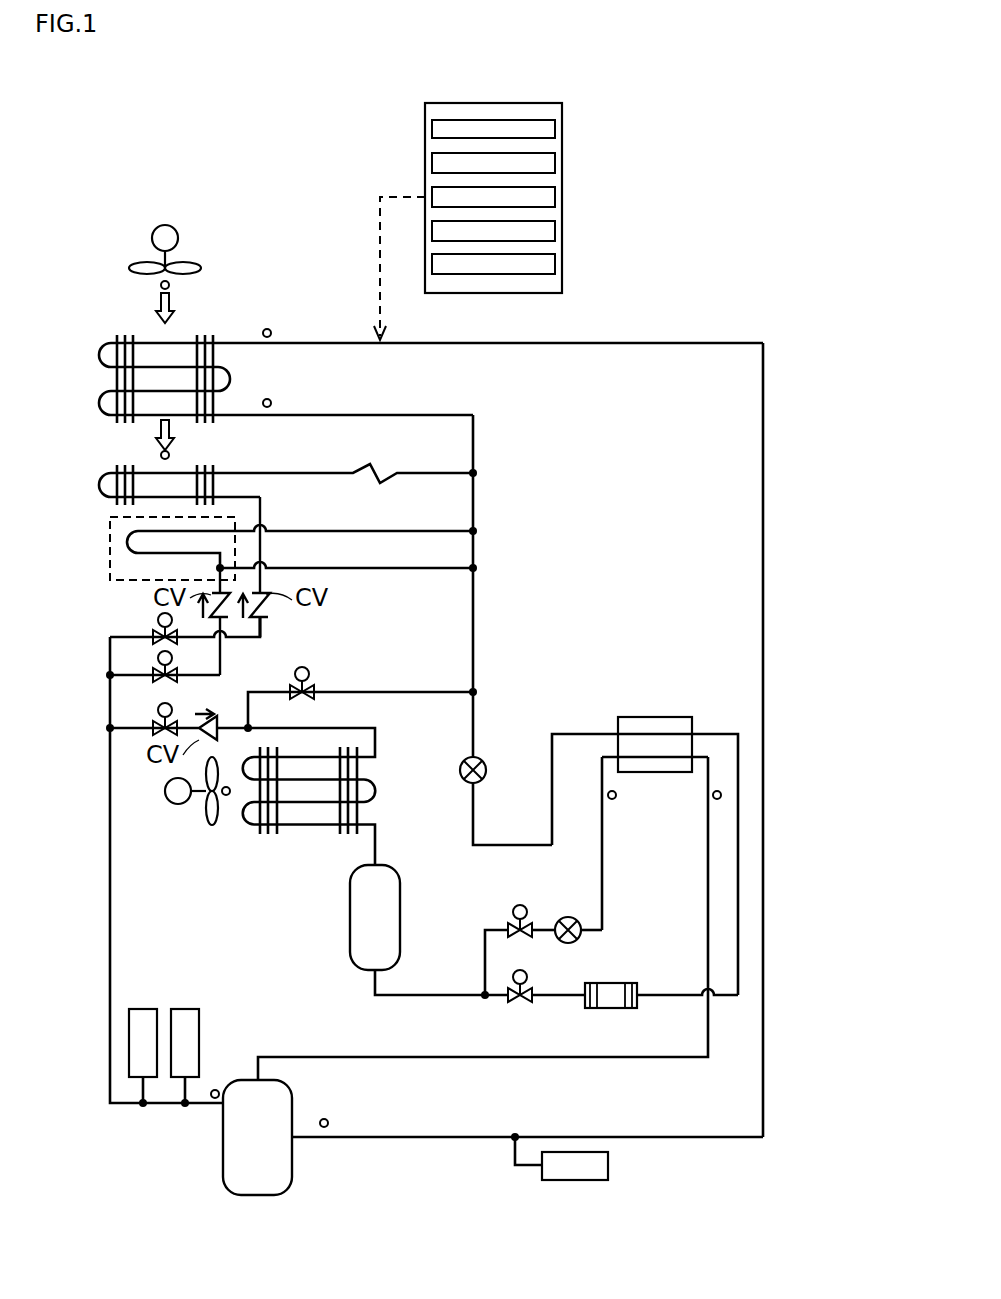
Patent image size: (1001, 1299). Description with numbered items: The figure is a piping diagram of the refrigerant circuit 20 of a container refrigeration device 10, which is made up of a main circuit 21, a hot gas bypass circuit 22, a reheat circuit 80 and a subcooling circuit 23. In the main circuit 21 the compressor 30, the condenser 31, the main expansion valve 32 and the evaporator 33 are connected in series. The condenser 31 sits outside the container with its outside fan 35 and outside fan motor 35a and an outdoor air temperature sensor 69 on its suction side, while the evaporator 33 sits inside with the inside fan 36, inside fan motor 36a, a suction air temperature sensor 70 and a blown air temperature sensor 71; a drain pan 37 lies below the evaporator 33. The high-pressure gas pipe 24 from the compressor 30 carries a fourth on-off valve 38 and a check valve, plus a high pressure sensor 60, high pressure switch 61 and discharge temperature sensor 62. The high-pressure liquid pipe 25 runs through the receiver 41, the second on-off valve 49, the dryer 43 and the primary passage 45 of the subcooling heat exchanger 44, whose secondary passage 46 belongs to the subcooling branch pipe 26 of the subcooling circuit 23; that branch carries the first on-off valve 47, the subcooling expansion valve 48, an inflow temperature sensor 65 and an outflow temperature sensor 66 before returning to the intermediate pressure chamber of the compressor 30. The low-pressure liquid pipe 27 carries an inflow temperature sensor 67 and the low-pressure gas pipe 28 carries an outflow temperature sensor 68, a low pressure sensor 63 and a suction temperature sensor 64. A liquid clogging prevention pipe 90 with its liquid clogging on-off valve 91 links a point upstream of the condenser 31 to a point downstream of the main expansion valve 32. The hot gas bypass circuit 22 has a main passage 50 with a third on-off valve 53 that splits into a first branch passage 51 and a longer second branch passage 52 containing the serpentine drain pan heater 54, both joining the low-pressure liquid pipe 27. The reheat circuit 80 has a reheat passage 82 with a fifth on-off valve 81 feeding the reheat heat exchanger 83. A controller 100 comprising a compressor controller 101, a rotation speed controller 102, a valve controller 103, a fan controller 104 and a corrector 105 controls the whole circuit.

The container refrigeration device 10 is at (62, 205).
The refrigerant circuit 20 is at (730, 316).
The main circuit 21 is at (783, 598).
The hot gas bypass circuit 22 is at (92, 648).
The subcooling circuit 23 is at (592, 880).
The high-pressure gas pipe 24 is at (108, 772).
The high-pressure liquid pipe 25 is at (456, 998).
The subcooling branch pipe 26 is at (605, 905).
The low-pressure liquid pipe 27 is at (476, 499).
The low-pressure gas pipe 28 is at (716, 1139).
The compressor 30 is at (222, 1166).
The condenser 31 is at (380, 790).
The main expansion valve 32 is at (482, 759).
The evaporator 33 is at (100, 352).
The outside fan 35 is at (208, 820).
The outside fan motor 35a is at (165, 790).
The inside fan 36 is at (201, 268).
The inside fan motor 36a is at (168, 224).
The drain pan 37 is at (110, 530).
The fourth on-off valve 38 is at (156, 722).
The receiver 41 is at (402, 893).
The dryer 43 is at (615, 1010).
The subcooling heat exchanger 44 is at (675, 716).
The primary passage 45 is at (630, 733).
The secondary passage 46 is at (658, 760).
The first on-off valve 47 is at (520, 939).
The subcooling expansion valve 48 is at (579, 939).
The second on-off valve 49 is at (520, 1004).
The main passage 50 is at (108, 692).
The first branch passage 51 is at (375, 570).
The second branch passage 52 is at (418, 530).
The third on-off valve 53 is at (178, 681).
The drain pan heater 54 is at (127, 545).
The high pressure sensor 60 is at (143, 1008).
The high pressure switch 61 is at (185, 1008).
The discharge temperature sensor 62 is at (216, 1089).
The low pressure sensor 63 is at (611, 1166).
The suction temperature sensor 64 is at (326, 1119).
The inflow temperature sensor 65 is at (614, 800).
The outflow temperature sensor 66 is at (722, 795).
The inflow temperature sensor 67 is at (271, 400).
The outflow temperature sensor 68 is at (271, 330).
The outdoor air temperature sensor 69 is at (228, 797).
The suction air temperature sensor 70 is at (160, 286).
The blown air temperature sensor 71 is at (162, 456).
The reheat circuit 80 is at (62, 485).
The fifth on-off valve 81 is at (158, 633).
The reheat passage 82 is at (258, 639).
The reheat heat exchanger 83 is at (100, 480).
The liquid clogging prevention pipe 90 is at (365, 692).
The liquid clogging on-off valve 91 is at (312, 699).
The controller 100 is at (494, 102).
The compressor controller 101 is at (556, 129).
The rotation speed controller 102 is at (556, 163).
The valve controller 103 is at (556, 197).
The fan controller 104 is at (556, 231).
The corrector 105 is at (556, 264).